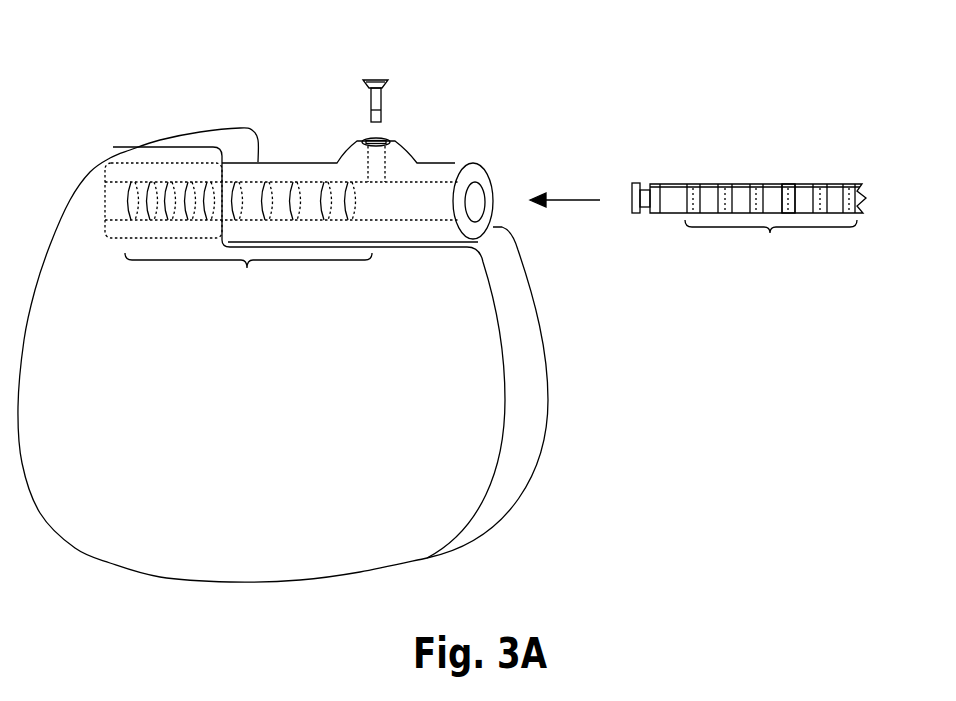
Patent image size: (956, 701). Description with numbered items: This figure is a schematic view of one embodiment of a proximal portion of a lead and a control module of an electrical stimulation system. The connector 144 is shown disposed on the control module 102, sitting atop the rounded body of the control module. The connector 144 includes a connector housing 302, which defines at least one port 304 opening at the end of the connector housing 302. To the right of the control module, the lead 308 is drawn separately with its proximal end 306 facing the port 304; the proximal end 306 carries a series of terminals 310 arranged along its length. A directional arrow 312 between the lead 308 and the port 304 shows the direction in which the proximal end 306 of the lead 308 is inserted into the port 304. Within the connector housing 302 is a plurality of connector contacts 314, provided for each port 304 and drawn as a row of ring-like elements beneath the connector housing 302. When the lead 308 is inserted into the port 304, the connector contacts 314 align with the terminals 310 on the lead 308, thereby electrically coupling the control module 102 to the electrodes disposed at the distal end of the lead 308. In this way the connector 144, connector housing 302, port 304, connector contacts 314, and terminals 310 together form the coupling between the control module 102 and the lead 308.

The control module 102 is at (80, 140).
The connector 144 is at (290, 162).
The connector housing 302 is at (145, 168).
The port 304 is at (487, 185).
The proximal end 306 is at (733, 167).
The lead 308 is at (795, 183).
The terminals 310 is at (771, 246).
The directional arrow 312 is at (572, 200).
The connector contacts 314 is at (248, 278).